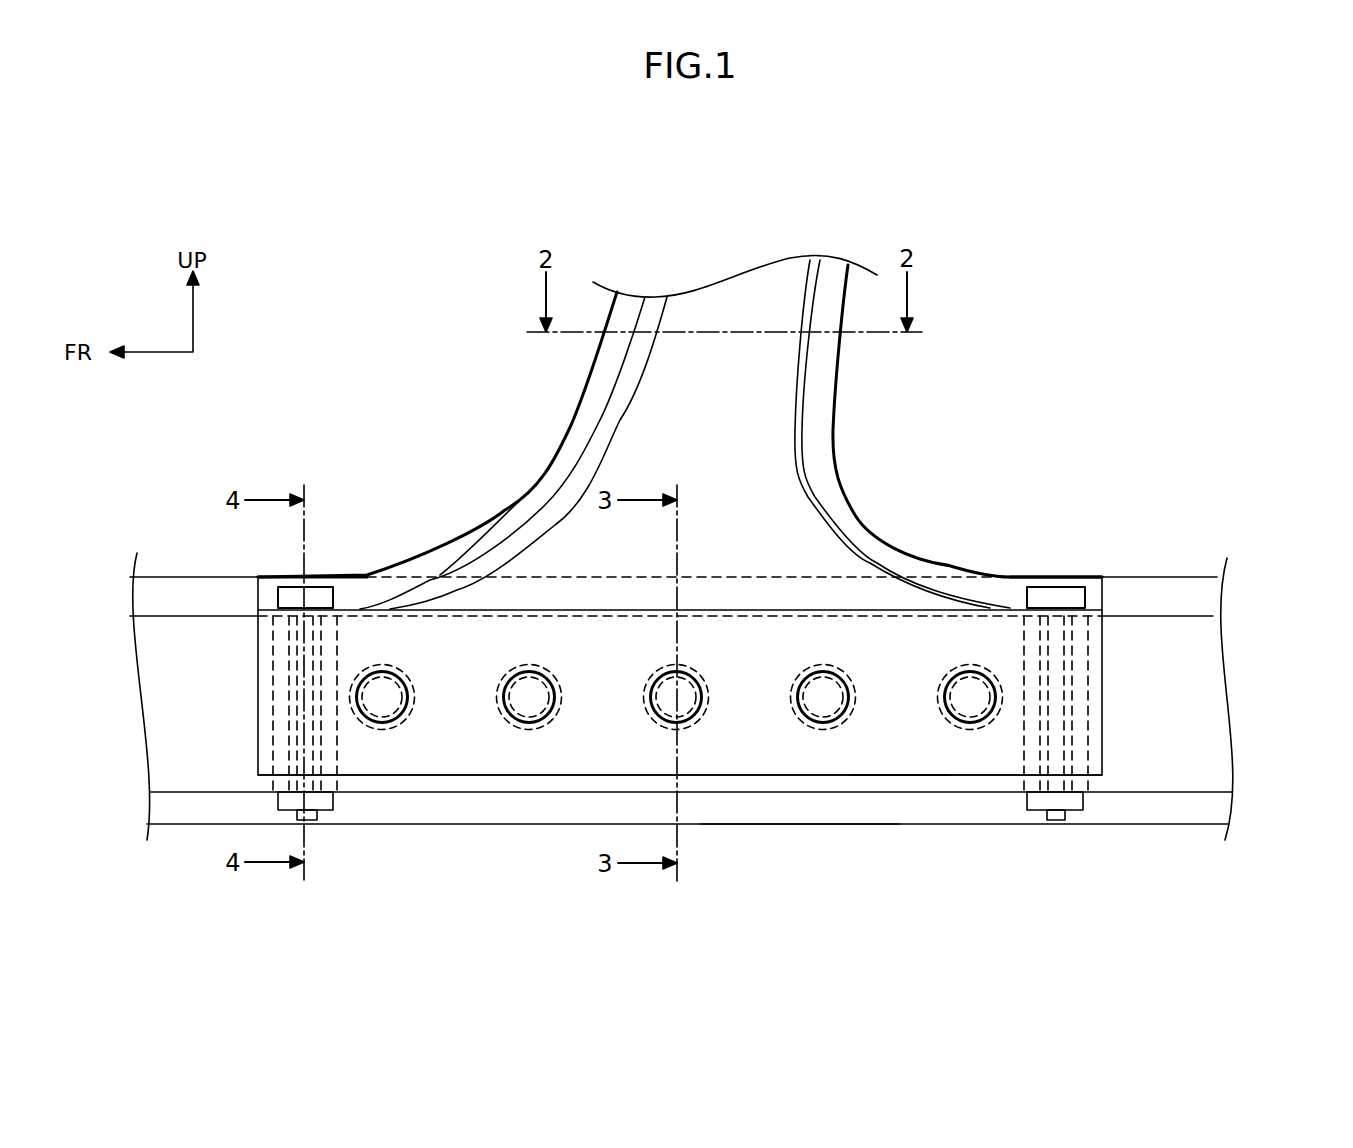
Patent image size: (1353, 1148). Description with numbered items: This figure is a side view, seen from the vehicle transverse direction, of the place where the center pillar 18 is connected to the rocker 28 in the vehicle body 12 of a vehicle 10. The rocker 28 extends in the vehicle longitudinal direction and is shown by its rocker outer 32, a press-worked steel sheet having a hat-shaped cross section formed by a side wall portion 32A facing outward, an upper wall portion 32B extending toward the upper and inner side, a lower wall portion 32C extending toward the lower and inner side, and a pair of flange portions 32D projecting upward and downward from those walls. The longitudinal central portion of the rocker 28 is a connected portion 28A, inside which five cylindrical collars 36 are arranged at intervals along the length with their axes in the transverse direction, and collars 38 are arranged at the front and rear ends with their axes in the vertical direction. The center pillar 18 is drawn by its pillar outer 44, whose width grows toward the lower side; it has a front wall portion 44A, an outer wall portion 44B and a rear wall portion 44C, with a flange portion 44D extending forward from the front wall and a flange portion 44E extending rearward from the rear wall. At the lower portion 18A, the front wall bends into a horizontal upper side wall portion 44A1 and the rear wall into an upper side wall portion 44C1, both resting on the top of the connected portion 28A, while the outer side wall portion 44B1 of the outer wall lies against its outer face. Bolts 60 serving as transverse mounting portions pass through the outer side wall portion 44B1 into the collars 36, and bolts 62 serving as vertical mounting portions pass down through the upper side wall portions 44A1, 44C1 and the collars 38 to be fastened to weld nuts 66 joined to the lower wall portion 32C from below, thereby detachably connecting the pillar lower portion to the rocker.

The vehicle 10 is at (733, 577).
The vehicle body 12 is at (1066, 308).
The center pillar 18 is at (931, 378).
The lower portion 18A is at (890, 752).
The rocker 28 is at (407, 862).
The connected portion 28A is at (807, 805).
The rocker outer 32 is at (1224, 716).
The side wall portion 32A is at (1197, 652).
The upper wall portion 32B is at (1188, 612).
The lower wall portion 32C is at (1213, 793).
The flange portions 32D is at (1093, 590).
The collars 36 is at (380, 665).
The collars 38 is at (273, 665).
The pillar outer 44 is at (830, 456).
The front wall portion 44A is at (592, 414).
The upper side wall portion 44A1 is at (263, 613).
The outer wall portion 44B is at (668, 403).
The outer side wall portion 44B1 is at (477, 748).
The rear wall portion 44C is at (835, 497).
The upper side wall portion 44C1 is at (1103, 612).
The flange portion 44D is at (538, 497).
The flange portion 44E is at (908, 555).
The bolts 60 is at (385, 700).
The bolts 62 is at (320, 592).
The weld nuts 66 is at (327, 802).